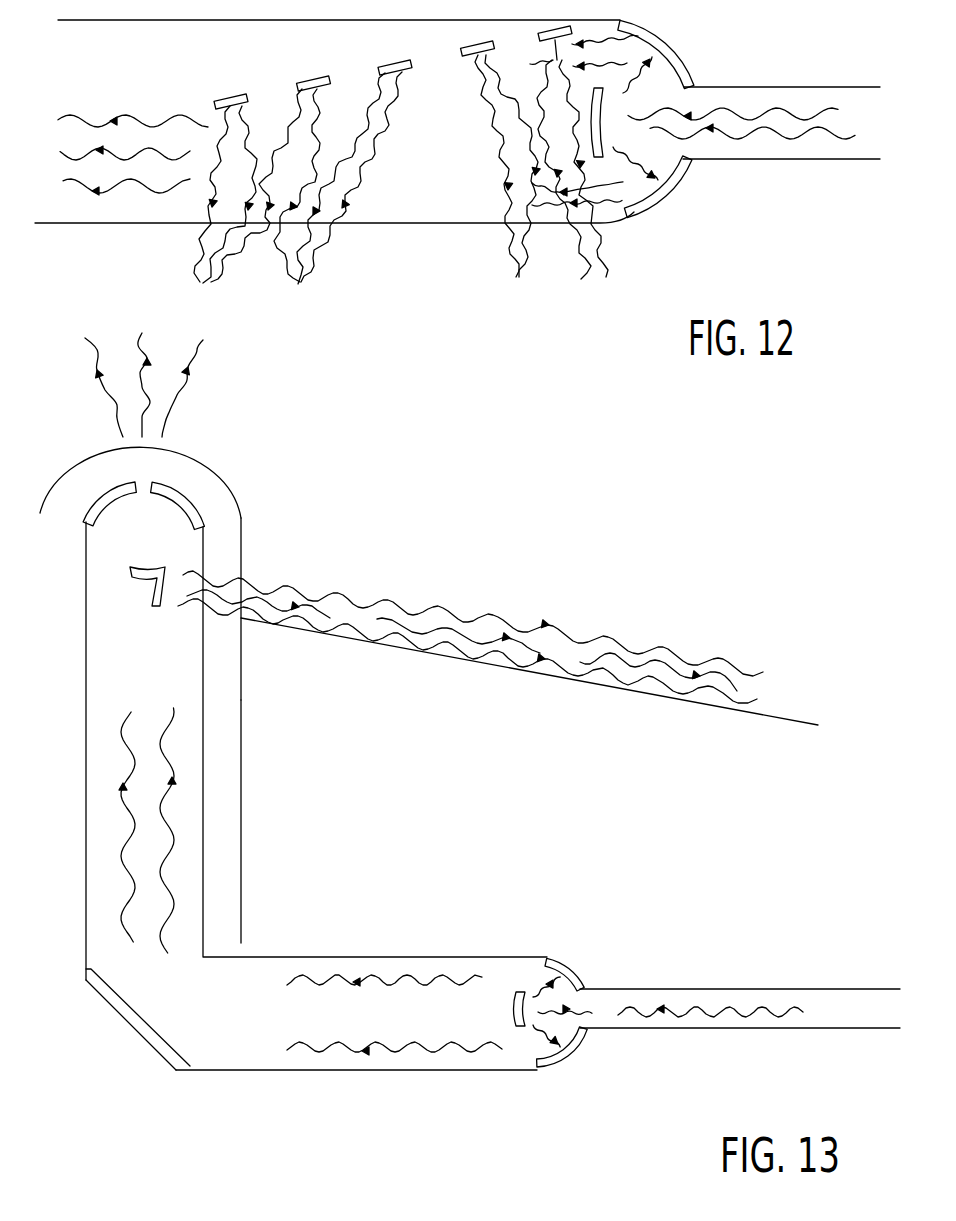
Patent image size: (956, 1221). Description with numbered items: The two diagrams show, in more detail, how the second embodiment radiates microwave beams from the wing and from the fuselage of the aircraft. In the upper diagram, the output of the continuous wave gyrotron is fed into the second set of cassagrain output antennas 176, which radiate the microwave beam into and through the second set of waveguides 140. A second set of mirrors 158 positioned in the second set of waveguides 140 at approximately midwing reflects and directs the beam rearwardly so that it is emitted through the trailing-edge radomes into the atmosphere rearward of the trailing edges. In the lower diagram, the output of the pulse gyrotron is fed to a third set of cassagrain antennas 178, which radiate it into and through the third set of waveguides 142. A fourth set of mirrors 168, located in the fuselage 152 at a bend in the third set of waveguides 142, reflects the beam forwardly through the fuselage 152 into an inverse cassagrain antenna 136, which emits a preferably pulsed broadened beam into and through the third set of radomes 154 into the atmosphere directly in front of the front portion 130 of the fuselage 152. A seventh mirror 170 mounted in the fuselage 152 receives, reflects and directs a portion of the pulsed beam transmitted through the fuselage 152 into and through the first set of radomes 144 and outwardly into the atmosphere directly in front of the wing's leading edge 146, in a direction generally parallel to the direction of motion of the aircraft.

In FIG. 12, the second set of waveguides 140 is at (412, 223).
In FIG. 12, the second set of mirrors 158 is at (471, 47).
In FIG. 12, the second set of cassagrain output antennas 176 is at (677, 50).
In FIG. 13, the third set of radomes 154 is at (193, 462).
In FIG. 13, the inverse cassagrain antenna 136 is at (193, 510).
In FIG. 13, the front portion 130 is at (241, 522).
In FIG. 13, the fuselage 152 is at (243, 790).
In FIG. 13, the first set of radomes 144 is at (247, 574).
In FIG. 13, the leading edge 146 is at (623, 690).
In FIG. 13, the seventh mirror 170 is at (155, 592).
In FIG. 13, the fourth set of mirrors 168 is at (133, 1023).
In FIG. 13, the third set of cassagrain antennas 178 is at (572, 962).
In FIG. 13, the third set of waveguides 142 is at (473, 1070).